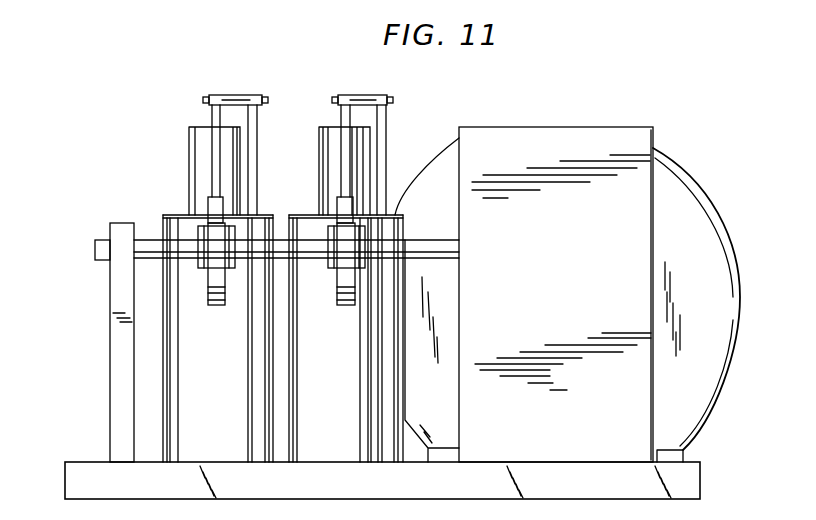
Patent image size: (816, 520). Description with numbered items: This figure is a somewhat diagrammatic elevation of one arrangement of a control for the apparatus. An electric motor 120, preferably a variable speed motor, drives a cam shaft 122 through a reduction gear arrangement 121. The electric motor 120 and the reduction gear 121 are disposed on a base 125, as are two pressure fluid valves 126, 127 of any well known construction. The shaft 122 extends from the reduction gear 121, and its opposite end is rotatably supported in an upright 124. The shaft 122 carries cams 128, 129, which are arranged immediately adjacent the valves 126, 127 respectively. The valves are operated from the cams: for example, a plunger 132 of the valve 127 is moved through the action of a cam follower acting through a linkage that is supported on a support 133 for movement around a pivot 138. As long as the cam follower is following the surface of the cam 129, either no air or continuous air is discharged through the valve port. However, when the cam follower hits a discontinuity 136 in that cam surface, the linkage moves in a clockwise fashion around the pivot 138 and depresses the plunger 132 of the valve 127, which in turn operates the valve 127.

The electric motor 120 is at (685, 170).
The reduction gear arrangement 121 is at (560, 138).
The cam shaft 122 is at (447, 230).
The upright 124 is at (112, 223).
The base 125 is at (702, 472).
The pressure fluid valve 126 is at (353, 422).
The pressure fluid valve 127 is at (235, 427).
The cam 128 is at (340, 307).
The cam 129 is at (215, 307).
The plunger 132 is at (189, 140).
The support 133 is at (257, 143).
The discontinuity 136 is at (208, 223).
The pivot 138 is at (205, 100).